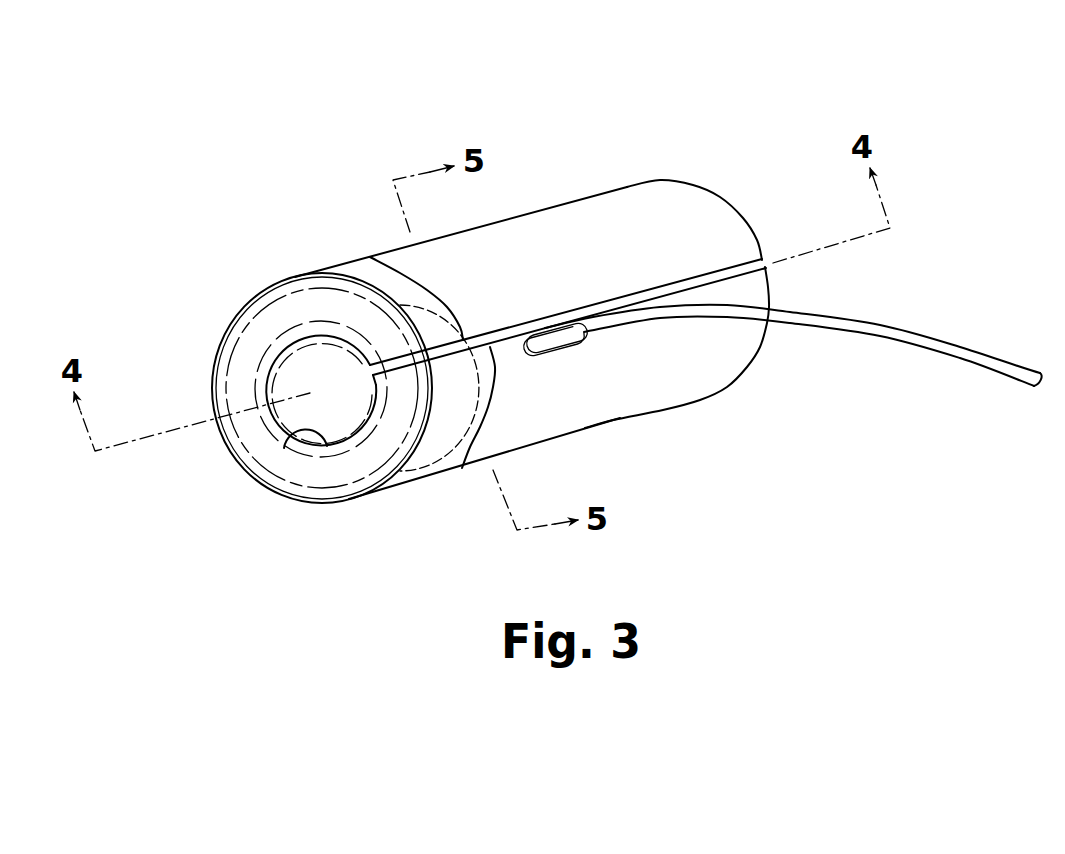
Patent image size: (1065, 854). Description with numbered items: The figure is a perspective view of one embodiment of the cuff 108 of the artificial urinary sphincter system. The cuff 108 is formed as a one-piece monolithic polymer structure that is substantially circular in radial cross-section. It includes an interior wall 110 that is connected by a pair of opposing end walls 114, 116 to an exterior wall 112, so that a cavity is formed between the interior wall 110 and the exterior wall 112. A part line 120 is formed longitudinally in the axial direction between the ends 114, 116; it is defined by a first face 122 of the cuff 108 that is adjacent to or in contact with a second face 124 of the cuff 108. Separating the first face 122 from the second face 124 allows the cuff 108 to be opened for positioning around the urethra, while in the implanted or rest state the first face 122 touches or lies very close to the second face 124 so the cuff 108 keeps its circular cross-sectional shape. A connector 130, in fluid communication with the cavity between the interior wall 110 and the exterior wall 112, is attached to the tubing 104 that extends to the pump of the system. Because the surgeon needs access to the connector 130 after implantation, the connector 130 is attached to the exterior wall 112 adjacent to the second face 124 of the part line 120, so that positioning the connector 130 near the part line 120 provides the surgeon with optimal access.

The tubing 104 is at (935, 345).
The cuff 108 is at (288, 142).
The interior wall 110 is at (290, 437).
The exterior wall 112 is at (432, 440).
The end wall 114 is at (233, 342).
The end wall 116 is at (735, 212).
The part line 120 is at (637, 288).
The first face 122 is at (370, 257).
The second face 124 is at (462, 468).
The connector 130 is at (570, 345).